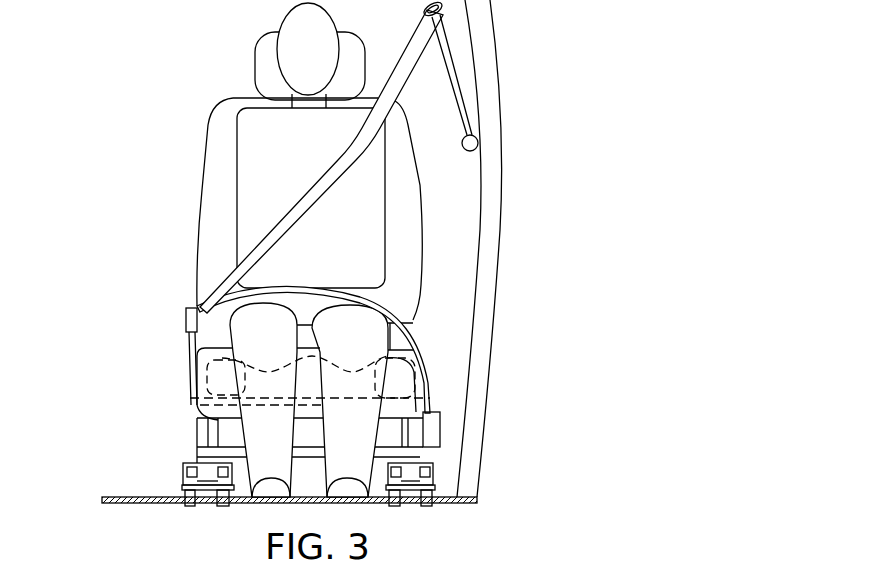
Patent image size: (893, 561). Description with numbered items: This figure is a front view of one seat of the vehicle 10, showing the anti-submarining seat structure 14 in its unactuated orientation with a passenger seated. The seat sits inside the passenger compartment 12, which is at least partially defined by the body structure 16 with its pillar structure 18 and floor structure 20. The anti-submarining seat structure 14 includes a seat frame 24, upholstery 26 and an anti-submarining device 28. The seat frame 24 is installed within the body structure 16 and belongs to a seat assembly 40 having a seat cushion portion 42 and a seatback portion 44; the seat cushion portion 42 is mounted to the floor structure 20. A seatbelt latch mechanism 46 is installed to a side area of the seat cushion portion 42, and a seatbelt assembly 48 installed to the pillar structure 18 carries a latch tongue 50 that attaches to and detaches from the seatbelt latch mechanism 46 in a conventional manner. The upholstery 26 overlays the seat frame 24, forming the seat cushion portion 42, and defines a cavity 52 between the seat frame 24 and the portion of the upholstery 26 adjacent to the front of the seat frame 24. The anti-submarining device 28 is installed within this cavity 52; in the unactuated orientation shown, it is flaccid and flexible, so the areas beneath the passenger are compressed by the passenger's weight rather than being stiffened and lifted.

The vehicle 10 is at (181, 52).
The passenger compartment 12 is at (510, 248).
The anti-submarining seat structure 14 is at (432, 381).
The body structure 16 is at (503, 72).
The pillar structure 18 is at (491, 172).
The floor structure 20 is at (130, 496).
The seat frame 24 is at (208, 433).
The upholstery 26 is at (200, 358).
The anti-submarining device 28 is at (357, 399).
The seat assembly 40 is at (426, 362).
The seat cushion portion 42 is at (205, 383).
The seatback portion 44 is at (218, 204).
The seatbelt latch mechanism 46 is at (186, 319).
The seatbelt assembly 48 is at (398, 67).
The latch tongue 50 is at (192, 309).
The cavity 52 is at (247, 367).